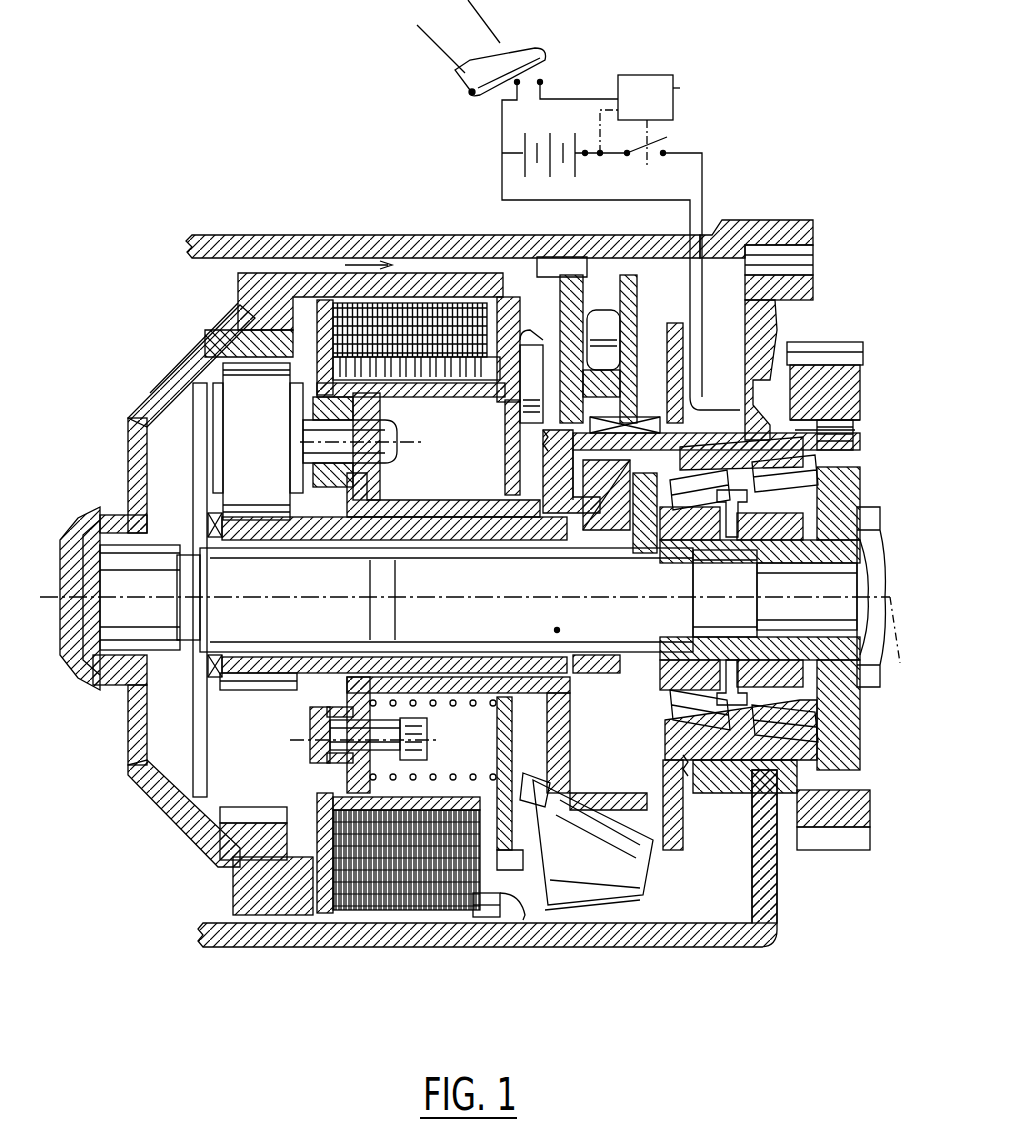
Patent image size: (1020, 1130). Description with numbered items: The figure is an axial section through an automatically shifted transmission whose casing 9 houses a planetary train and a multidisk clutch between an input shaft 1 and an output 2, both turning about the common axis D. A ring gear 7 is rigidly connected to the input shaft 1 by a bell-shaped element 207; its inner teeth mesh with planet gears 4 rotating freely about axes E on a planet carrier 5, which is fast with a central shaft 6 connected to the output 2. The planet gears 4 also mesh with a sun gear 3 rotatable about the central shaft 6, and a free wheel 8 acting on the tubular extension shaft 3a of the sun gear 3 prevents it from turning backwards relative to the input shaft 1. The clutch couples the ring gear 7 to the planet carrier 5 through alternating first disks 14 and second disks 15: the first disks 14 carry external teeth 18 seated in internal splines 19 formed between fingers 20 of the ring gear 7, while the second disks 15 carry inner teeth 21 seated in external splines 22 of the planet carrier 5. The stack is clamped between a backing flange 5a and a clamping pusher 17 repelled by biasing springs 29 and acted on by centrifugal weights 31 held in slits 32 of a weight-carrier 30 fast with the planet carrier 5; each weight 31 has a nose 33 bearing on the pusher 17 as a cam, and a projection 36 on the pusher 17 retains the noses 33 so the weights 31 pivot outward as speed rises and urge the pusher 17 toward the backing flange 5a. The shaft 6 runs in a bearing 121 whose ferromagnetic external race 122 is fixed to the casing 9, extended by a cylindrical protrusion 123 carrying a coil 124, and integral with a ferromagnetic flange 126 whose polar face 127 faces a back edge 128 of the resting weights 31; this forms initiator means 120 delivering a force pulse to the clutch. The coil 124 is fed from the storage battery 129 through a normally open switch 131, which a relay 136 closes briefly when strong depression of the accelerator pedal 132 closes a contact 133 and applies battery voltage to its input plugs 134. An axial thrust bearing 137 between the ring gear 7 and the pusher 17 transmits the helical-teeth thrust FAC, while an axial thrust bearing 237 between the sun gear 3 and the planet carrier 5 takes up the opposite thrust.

The input shaft 1 is at (107, 503).
The output 2 is at (857, 713).
The sun gear 3 is at (297, 680).
The tubular extension shaft 3a is at (403, 548).
The planet gears 4 is at (200, 357).
The planet carrier 5 is at (196, 440).
The backing flange 5a is at (308, 317).
The central shaft 6 is at (557, 628).
The ring gear 7 is at (250, 413).
The free wheel 8 is at (613, 510).
The casing 9 is at (263, 240).
The first disks 14 is at (485, 912).
The second disks 15 is at (490, 773).
The clamping pusher 17 is at (500, 470).
The external teeth 18 is at (473, 900).
The internal splines 19 is at (505, 905).
The fingers 20 is at (510, 907).
The inner teeth 21 is at (465, 790).
The external splines 22 is at (313, 797).
The biasing springs 29 is at (443, 690).
The weight-carrier 30 is at (572, 300).
The centrifugal weights 31 is at (597, 290).
The slit 32 is at (620, 880).
The nose 33 is at (512, 407).
The projection 36 is at (530, 323).
The initiator means 120 is at (710, 377).
The bearing 121 is at (752, 400).
The external race 122 is at (853, 455).
The cylindrical protrusion 123 is at (541, 490).
The coil 124 is at (543, 437).
The ferromagnetical flange 126 is at (675, 325).
The polar face 127 is at (672, 325).
The back edge 128 is at (660, 335).
The storage battery 129 is at (538, 128).
The switch 131 is at (655, 158).
The accelerator pedal 132 is at (556, 62).
The contact 133 is at (537, 77).
The input plugs 134 is at (628, 110).
The relay 136 is at (680, 88).
The axial thrust bearing 137 is at (478, 285).
The bell-shaped element 207 is at (170, 360).
The axial thrust bearing 237 is at (135, 448).
The axis of rotation D is at (880, 600).
The axes E is at (405, 440).
The axial thrust FAC is at (362, 258).